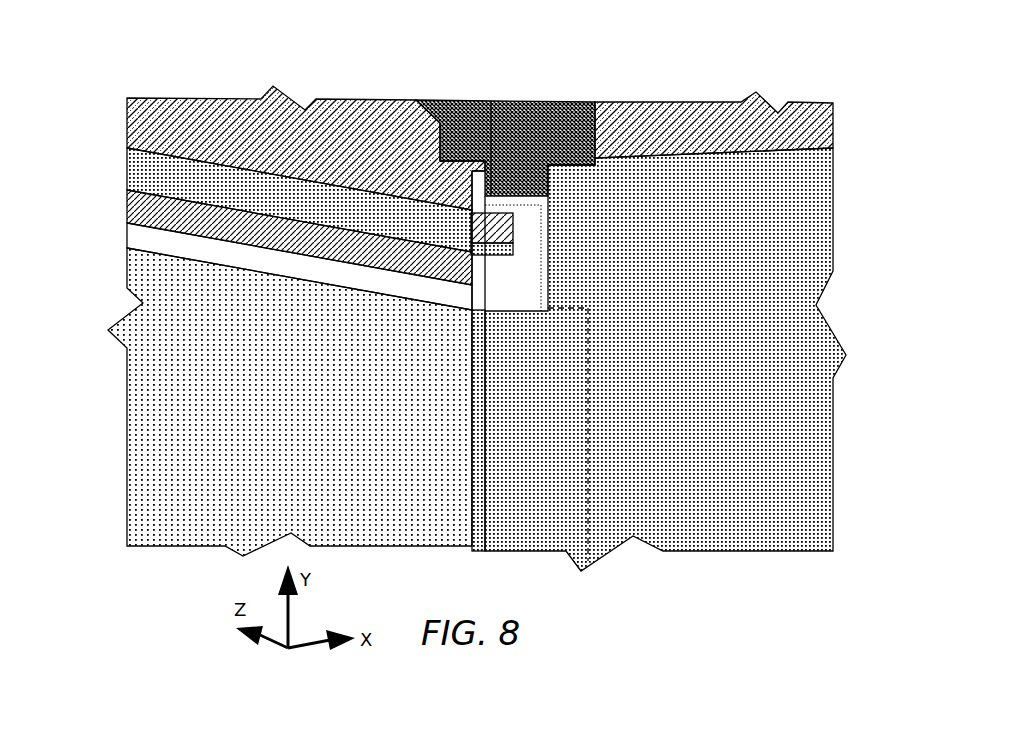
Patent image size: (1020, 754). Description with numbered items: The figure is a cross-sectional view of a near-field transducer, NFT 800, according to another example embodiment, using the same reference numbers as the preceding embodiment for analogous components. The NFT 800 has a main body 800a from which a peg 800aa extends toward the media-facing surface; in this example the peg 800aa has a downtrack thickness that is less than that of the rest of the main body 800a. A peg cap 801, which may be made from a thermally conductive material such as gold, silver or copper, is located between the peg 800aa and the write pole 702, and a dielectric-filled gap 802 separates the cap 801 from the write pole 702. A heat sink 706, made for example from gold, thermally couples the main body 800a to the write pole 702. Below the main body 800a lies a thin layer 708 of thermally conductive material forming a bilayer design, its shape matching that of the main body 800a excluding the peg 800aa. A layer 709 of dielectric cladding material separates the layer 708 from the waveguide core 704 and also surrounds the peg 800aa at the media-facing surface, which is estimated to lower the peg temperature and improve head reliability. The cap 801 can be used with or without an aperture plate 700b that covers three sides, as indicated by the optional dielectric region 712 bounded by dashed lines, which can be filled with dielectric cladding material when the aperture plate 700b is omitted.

The NFT 800 is at (222, 60).
The main body 800a is at (127, 160).
The peg 800aa is at (505, 240).
The peg cap 801 is at (490, 218).
The dielectric-filled gap 802 is at (503, 197).
The write pole 702 is at (540, 95).
The waveguide core 704 is at (200, 523).
The heat sink 706 is at (370, 115).
The thin layer 708 is at (143, 202).
The layer of dielectric material 709 is at (130, 233).
The region 712 is at (528, 510).
The aperture plate 700b is at (762, 520).